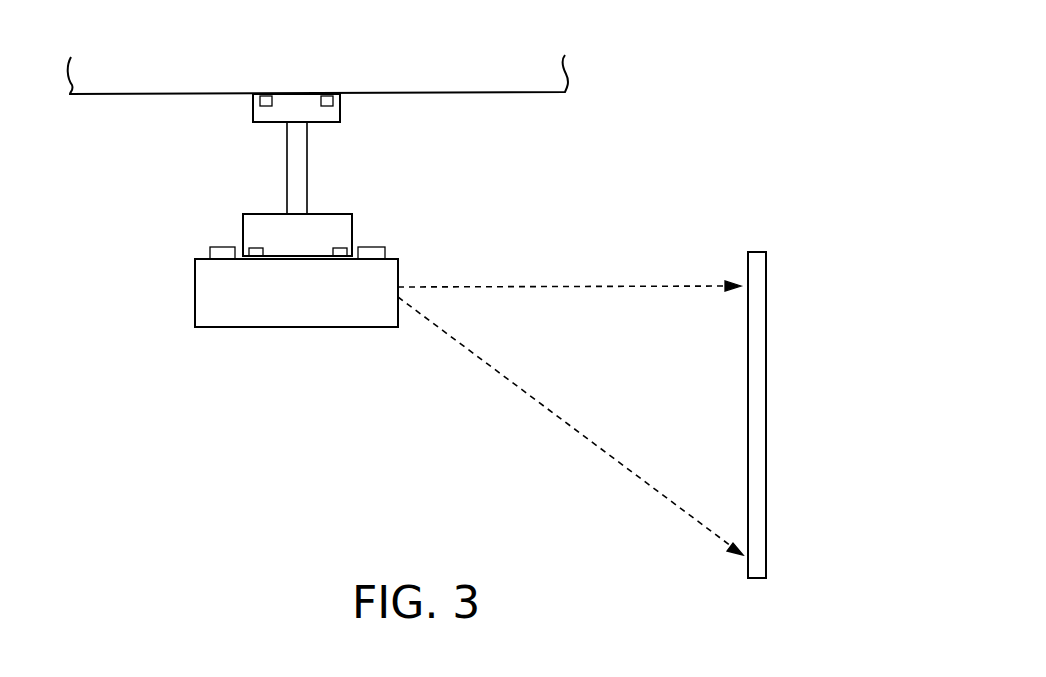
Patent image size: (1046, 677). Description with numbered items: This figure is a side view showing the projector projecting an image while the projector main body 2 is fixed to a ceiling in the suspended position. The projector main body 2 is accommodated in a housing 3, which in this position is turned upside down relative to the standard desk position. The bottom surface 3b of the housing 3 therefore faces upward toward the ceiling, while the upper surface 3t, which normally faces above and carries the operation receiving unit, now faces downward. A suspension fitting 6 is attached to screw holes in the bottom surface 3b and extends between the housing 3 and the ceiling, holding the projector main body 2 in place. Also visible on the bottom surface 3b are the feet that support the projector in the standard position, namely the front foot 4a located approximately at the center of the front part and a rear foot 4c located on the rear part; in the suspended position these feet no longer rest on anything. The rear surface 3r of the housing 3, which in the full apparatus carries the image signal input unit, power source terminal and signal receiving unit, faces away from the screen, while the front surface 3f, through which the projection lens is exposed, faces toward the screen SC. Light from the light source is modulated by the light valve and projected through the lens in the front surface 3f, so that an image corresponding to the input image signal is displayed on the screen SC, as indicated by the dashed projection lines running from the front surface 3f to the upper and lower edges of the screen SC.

The projector main body 2 is at (362, 392).
The housing 3 is at (300, 317).
The bottom surface 3b is at (203, 257).
The rear surface 3r is at (195, 303).
The front surface 3f is at (398, 263).
The upper surface 3t is at (212, 327).
The front foot 4a is at (377, 246).
The rear foot 4c is at (230, 246).
The suspension fitting 6 is at (302, 152).
The screen SC is at (747, 265).